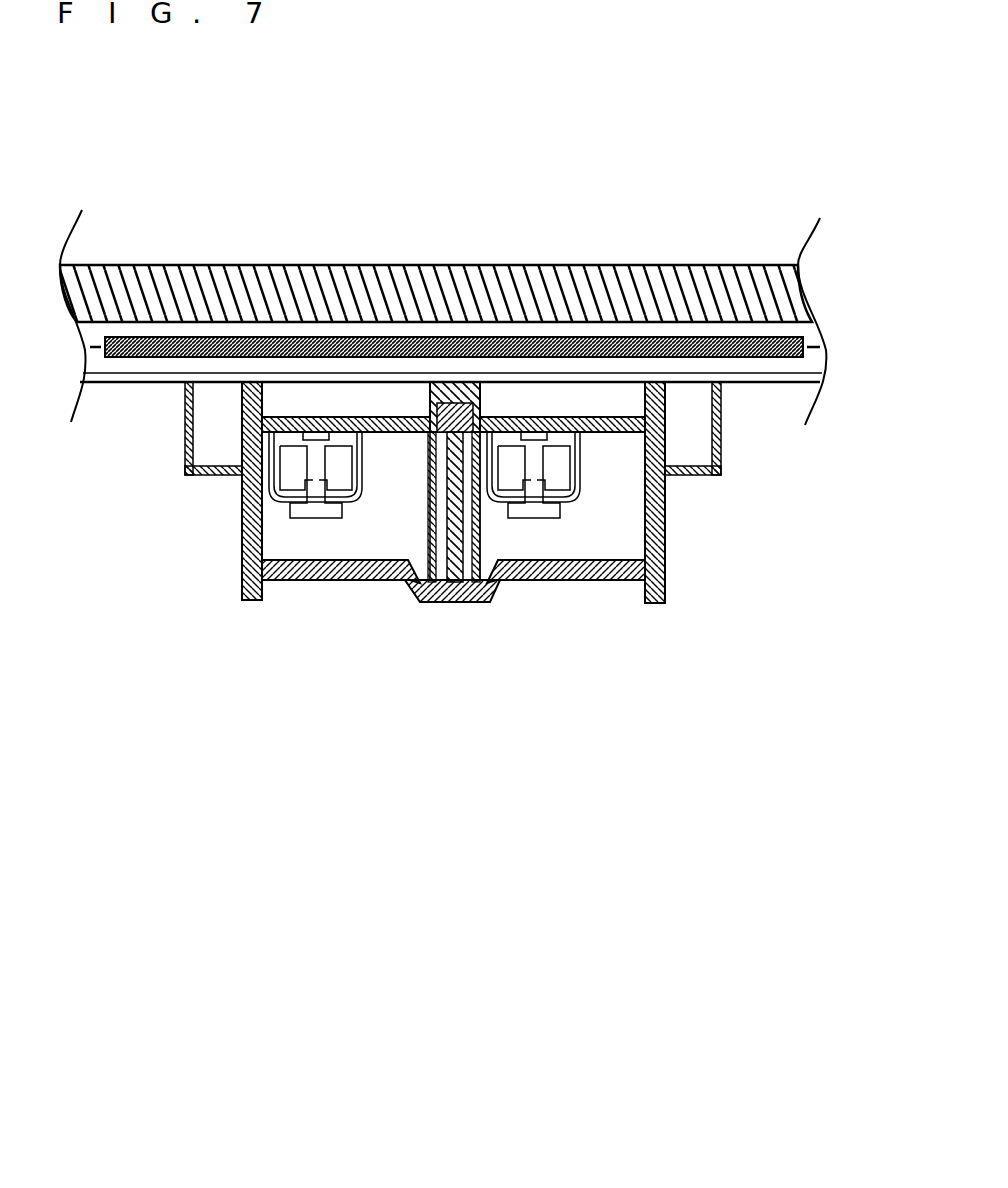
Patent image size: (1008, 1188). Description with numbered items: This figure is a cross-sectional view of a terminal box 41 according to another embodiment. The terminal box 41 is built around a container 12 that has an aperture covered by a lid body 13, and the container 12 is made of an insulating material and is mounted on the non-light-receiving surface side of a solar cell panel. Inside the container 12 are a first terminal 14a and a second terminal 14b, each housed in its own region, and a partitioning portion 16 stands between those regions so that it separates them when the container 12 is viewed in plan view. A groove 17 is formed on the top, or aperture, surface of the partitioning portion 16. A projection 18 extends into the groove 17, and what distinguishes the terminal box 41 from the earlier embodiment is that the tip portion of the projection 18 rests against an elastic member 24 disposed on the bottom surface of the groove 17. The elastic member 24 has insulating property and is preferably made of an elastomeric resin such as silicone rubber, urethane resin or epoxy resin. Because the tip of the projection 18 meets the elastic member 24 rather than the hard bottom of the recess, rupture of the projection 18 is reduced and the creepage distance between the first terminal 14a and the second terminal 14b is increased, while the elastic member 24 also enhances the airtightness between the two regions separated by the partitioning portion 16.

The container 12 is at (665, 540).
The lid body 13 is at (600, 580).
The first terminal 14a is at (580, 483).
The second terminal 14b is at (242, 503).
The partitioning portion 16 is at (410, 578).
The groove 17 is at (463, 518).
The projection 18 is at (433, 603).
The elastic member 24 is at (430, 443).
The terminal box 41 is at (553, 790).